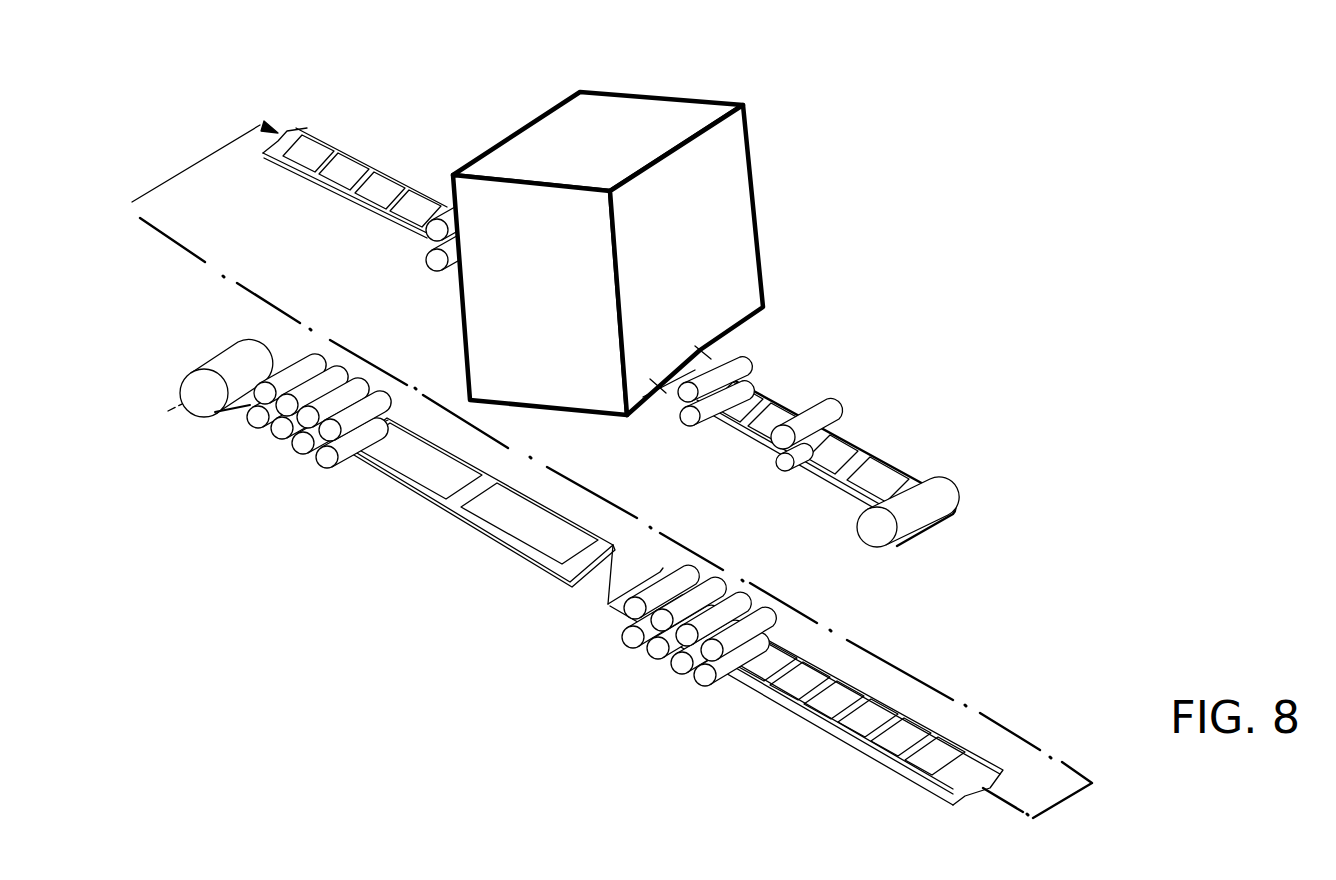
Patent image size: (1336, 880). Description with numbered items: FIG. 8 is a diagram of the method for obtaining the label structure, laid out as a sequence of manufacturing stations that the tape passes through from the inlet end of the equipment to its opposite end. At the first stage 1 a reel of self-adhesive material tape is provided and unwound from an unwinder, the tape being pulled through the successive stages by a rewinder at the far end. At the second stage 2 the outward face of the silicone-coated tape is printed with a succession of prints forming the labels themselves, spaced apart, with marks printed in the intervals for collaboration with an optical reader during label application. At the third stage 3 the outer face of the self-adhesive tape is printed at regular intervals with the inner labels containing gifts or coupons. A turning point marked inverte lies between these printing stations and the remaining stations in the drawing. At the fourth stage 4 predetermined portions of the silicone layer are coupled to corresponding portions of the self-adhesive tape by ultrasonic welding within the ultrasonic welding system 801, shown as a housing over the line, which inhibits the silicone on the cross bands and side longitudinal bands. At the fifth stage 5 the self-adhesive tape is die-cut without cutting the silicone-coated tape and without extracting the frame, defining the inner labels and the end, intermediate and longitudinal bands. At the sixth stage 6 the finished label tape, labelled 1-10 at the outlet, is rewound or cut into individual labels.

The self-adhesive material tape reel providing stage 1 is at (233, 363).
The label printing stage 2 is at (373, 602).
The inner label printing stage 3 is at (790, 703).
The ultrasonic welding stage 4 is at (305, 196).
The die-cutting stage 5 is at (1130, 222).
The rewinding or cutting stage 6 is at (1235, 347).
The ultrasonic welding system 801 is at (677, 93).
The end roller 1-10 is at (933, 527).
The inverter inverte is at (605, 570).